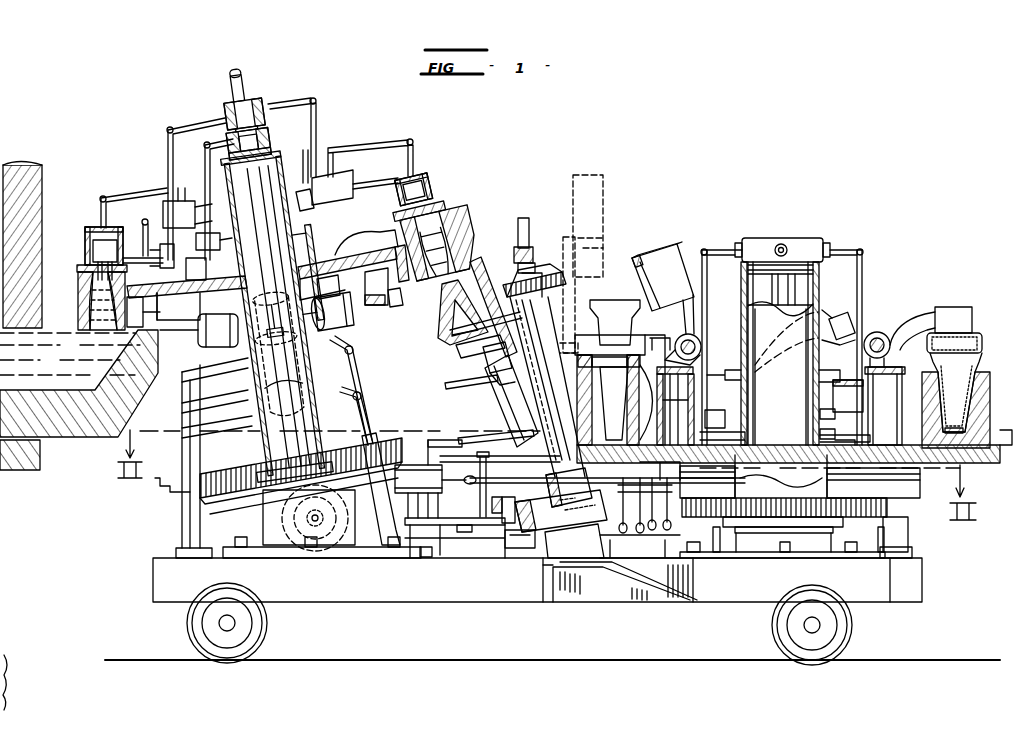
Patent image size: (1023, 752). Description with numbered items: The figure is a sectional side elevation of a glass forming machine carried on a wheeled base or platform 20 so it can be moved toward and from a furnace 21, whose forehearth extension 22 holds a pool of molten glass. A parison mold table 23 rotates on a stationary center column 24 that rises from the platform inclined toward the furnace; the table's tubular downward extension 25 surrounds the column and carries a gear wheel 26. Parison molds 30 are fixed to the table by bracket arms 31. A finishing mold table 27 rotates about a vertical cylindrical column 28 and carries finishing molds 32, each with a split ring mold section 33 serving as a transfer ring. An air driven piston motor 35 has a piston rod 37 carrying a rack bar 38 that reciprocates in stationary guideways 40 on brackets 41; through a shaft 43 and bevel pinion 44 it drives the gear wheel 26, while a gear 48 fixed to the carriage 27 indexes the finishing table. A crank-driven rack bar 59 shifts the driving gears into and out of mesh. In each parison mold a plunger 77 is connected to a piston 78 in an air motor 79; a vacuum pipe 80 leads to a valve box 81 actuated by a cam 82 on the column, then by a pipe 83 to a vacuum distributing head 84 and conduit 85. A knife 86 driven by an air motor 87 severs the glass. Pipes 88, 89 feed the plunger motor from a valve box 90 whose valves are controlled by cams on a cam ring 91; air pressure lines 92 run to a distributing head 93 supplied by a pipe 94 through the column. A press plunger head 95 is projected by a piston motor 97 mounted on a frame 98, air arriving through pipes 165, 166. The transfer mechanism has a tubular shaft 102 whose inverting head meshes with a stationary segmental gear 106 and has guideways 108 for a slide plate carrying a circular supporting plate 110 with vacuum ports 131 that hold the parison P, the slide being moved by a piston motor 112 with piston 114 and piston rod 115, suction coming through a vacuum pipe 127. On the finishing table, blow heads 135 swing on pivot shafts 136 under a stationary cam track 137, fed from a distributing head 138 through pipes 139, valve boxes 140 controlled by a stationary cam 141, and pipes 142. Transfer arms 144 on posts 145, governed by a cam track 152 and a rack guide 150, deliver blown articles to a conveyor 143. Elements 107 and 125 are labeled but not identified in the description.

The wheeled base or platform 20 is at (716, 597).
The furnace 21 is at (42, 175).
The forehearth extension 22 is at (72, 442).
The parison mold table 23 is at (334, 298).
The stationary center column 24 is at (248, 192).
The tubular downward extension 25 is at (320, 337).
The gear wheel 26 is at (403, 452).
The finishing mold table 27 is at (972, 465).
The vertical cylindrical column 28 is at (820, 288).
The parison molds 30 is at (80, 283).
The bracket arms 31 is at (404, 262).
The finishing molds 32 is at (630, 398).
The split ring mold section 33 is at (628, 360).
The air driven piston motor 35 is at (474, 477).
The piston rod 37 is at (443, 492).
The rack bar 38 is at (155, 490).
The stationary guideways 40 is at (908, 520).
The brackets 41 is at (912, 552).
The shaft 43 is at (308, 532).
The bevel pinion 44 is at (345, 532).
The gear 48 is at (762, 502).
The rack bar 59 is at (510, 540).
The plunger 77 is at (80, 306).
The piston 78 is at (92, 248).
The air motor 79 is at (95, 226).
The vacuum pipe 80 is at (146, 256).
The valve box 81 is at (206, 270).
The cam 82 is at (230, 238).
The pipe 83 is at (168, 152).
The vacuum distributing head 84 is at (262, 107).
The conduit 85 is at (243, 84).
The knife 86 is at (166, 350).
The air motor 87 is at (348, 324).
The pipe 88 is at (118, 198).
The pipe 89 is at (142, 224).
The valve box 90 is at (165, 208).
The cam ring 91 is at (302, 208).
The air pressure lines 92 is at (262, 180).
The distributing head 93 is at (268, 134).
The pipe 94 is at (372, 152).
The press plunger head 95 is at (282, 292).
The piston motor 97 is at (285, 412).
The frame 98 is at (182, 405).
The tubular shaft 102 is at (560, 338).
The stationary segmental gear 106 is at (562, 280).
The collar 107 is at (556, 505).
The guideways 108 is at (481, 260).
The circular supporting plate 110 is at (450, 340).
The piston motor 112 is at (500, 408).
The piston 114 is at (510, 437).
The piston rod 115 is at (486, 362).
The block 125 is at (548, 488).
The vacuum pipe 127 is at (530, 226).
The vacuum ports 131 is at (456, 356).
The blow heads 135 is at (645, 262).
The pivot shafts 136 is at (701, 347).
The stationary cam track 137 is at (850, 314).
The distributing head 138 is at (805, 240).
The pipes 139 is at (722, 250).
The valve boxes 140 is at (714, 416).
The stationary cam 141 is at (742, 372).
The pipes 142 is at (680, 402).
The conveyor 143 is at (472, 386).
The transfer arm 144 is at (815, 366).
The post 145 is at (666, 340).
The guide 150 is at (819, 437).
The cam track 152 is at (819, 417).
The pipe 165 is at (357, 372).
The pipe 166 is at (362, 407).
The parison P is at (448, 312).